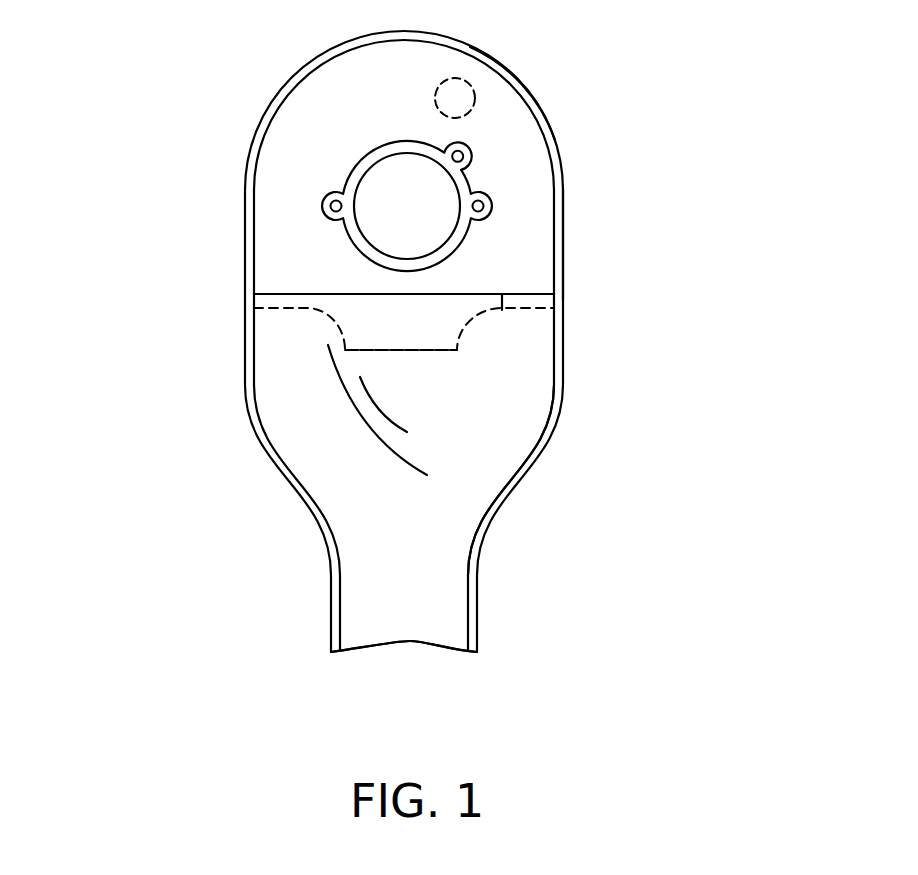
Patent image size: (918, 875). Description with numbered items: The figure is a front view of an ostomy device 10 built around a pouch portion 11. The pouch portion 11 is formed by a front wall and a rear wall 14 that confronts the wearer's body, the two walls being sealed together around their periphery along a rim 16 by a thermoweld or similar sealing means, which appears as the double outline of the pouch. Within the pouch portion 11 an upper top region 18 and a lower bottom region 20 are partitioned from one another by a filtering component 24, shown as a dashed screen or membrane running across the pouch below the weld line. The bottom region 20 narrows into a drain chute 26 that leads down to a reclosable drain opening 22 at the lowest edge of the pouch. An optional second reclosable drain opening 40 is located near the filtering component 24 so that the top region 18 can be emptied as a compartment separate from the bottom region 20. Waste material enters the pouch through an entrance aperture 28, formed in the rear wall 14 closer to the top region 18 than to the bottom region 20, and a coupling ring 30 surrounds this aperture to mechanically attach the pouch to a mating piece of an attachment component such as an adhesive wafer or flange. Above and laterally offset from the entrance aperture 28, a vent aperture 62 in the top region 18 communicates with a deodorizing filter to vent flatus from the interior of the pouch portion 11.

The ostomy device 10 is at (165, 208).
The pouch portion 11 is at (292, 412).
The rear wall 14 is at (530, 253).
The rim 16 is at (557, 194).
The top region 18 is at (512, 132).
The bottom region 20 is at (500, 447).
The reclosable drain opening 22 is at (422, 647).
The filtering component 24 is at (503, 306).
The narrowed drain chute 26 is at (430, 573).
The entrance aperture 28 is at (378, 187).
The coupling ring 30 is at (350, 237).
The second reclosable drain opening 40 is at (430, 352).
The vent aperture 62 is at (460, 90).